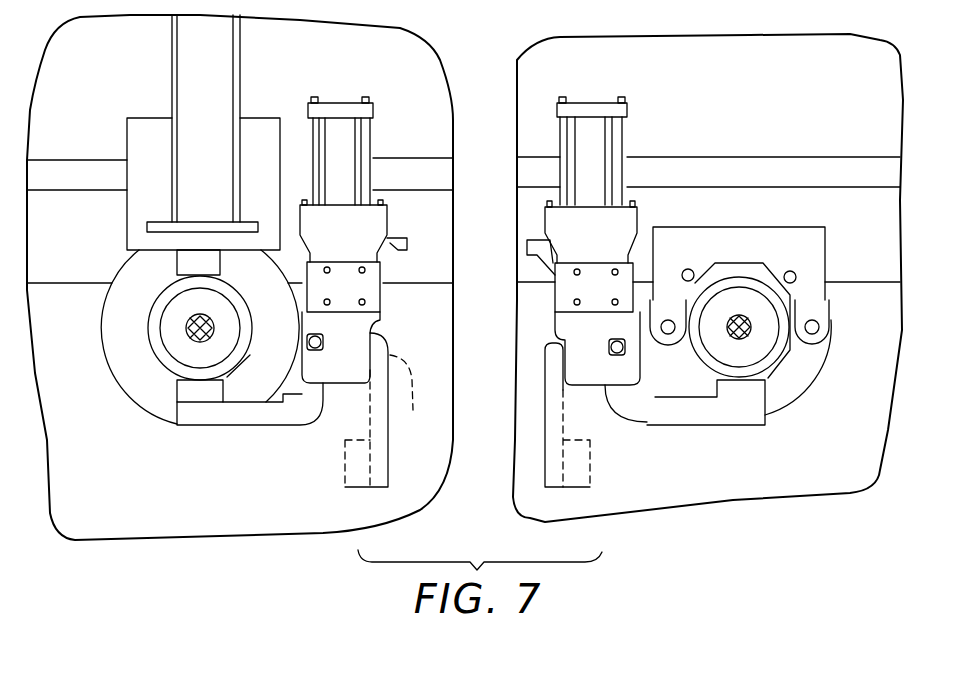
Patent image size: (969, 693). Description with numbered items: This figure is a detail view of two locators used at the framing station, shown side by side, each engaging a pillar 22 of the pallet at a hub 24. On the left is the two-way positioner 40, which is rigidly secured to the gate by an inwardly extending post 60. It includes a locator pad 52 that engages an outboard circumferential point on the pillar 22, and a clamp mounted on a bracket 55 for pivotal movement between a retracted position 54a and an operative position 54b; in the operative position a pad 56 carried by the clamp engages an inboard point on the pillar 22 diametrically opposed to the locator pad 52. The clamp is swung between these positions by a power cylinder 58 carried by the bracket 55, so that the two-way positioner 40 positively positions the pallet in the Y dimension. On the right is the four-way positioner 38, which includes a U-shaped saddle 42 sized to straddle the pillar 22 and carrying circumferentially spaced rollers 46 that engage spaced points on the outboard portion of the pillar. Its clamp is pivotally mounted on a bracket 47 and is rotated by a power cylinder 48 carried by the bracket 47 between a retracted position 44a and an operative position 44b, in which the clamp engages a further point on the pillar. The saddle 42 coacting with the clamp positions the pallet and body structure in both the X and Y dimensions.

The pillar 22 is at (158, 367).
The hub / axle screw 24 is at (187, 320).
The four-way positioner 38 is at (840, 213).
The two-way positioner 40 is at (91, 138).
The U-shaped saddle 42 is at (742, 237).
The retracted position of clamp 44a is at (556, 488).
The operative position of clamp 44b is at (697, 426).
The rollers 46 is at (812, 350).
The bracket 47 is at (565, 294).
The power cylinder 48 is at (560, 135).
The locator pad 52 is at (190, 266).
The retracted position of clamp 54a is at (394, 410).
The operative position of clamp 54b is at (212, 425).
The bracket 55 is at (338, 367).
The pad 56 is at (177, 392).
The power cylinder 58 is at (363, 143).
The inwardly extending post 60 is at (221, 57).